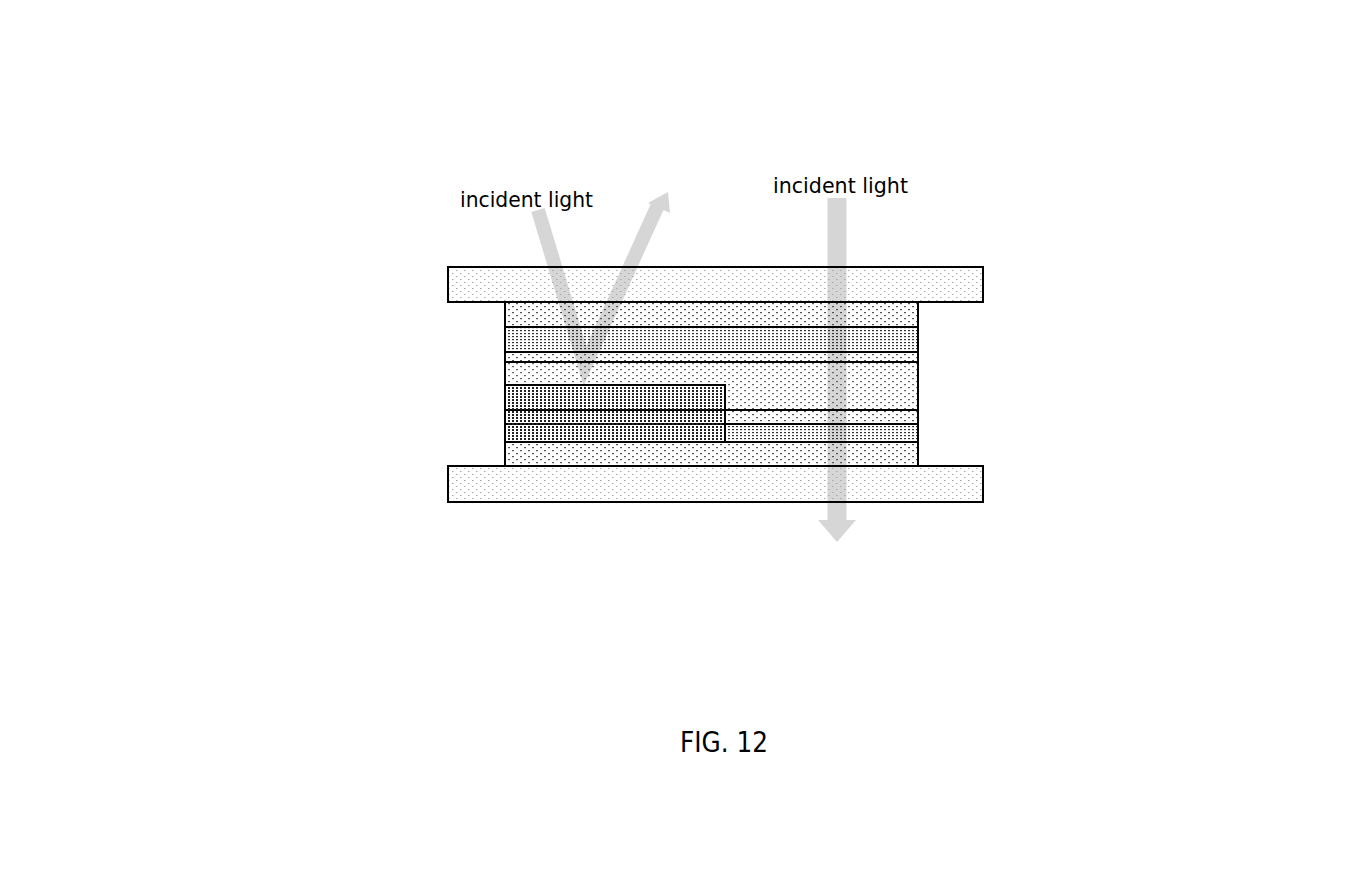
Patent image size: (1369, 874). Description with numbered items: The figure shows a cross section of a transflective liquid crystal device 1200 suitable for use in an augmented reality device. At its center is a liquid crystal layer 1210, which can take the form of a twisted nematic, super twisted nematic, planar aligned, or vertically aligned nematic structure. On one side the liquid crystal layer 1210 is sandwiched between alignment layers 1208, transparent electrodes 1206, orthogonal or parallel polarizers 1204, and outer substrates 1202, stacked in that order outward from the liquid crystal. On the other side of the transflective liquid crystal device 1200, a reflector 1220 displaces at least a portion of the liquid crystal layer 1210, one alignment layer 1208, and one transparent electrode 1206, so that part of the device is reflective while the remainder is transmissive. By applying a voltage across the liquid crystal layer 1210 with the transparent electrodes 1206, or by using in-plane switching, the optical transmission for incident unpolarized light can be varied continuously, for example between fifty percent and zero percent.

The transflective liquid crystal device 1200 is at (1010, 32).
The substrate 1202 is at (985, 283).
The polarizer 1204 is at (918, 318).
The transparent electrode 1206 is at (918, 340).
The alignment layer 1208 is at (503, 356).
The liquid crystal layer 1210 is at (503, 384).
The reflector 1220 is at (503, 416).